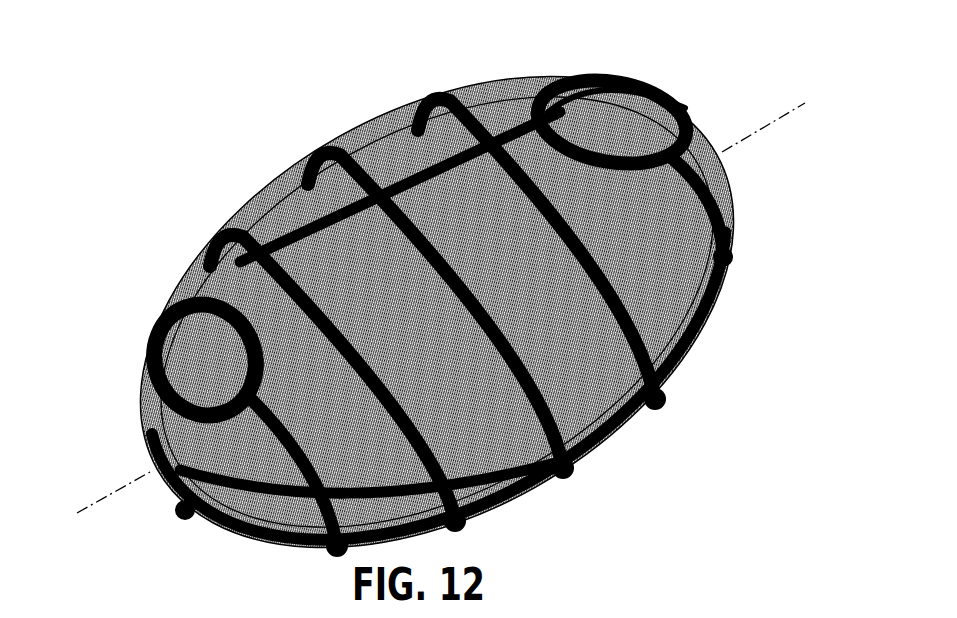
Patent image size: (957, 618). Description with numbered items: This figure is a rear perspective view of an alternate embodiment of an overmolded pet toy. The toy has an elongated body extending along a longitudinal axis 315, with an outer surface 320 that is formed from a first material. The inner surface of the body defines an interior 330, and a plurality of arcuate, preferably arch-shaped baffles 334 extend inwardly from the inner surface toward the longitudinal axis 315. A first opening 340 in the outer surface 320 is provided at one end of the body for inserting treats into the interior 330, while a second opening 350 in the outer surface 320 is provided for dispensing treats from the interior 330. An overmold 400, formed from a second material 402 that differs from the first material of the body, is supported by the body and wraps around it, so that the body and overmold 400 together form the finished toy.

The longitudinal axis 315 is at (118, 488).
The outer surface 320 is at (268, 198).
The interior 330 is at (626, 121).
The baffles 334 is at (385, 123).
The first opening 340 is at (177, 304).
The second opening 350 is at (617, 83).
The overmold 400 is at (423, 107).
The second material 402 is at (442, 96).